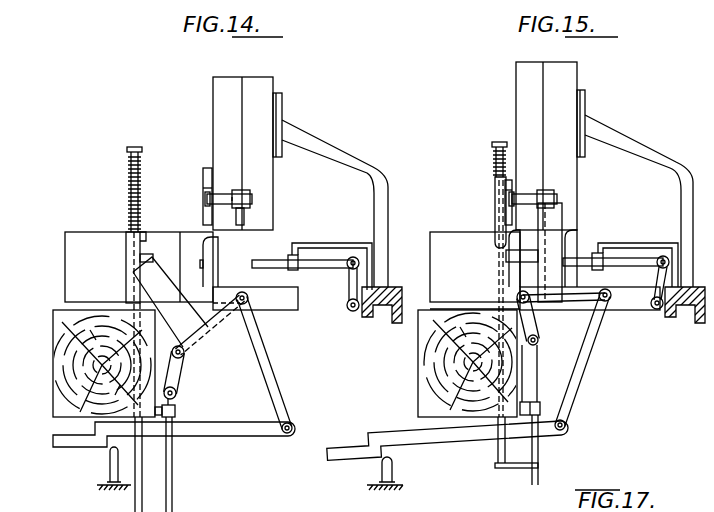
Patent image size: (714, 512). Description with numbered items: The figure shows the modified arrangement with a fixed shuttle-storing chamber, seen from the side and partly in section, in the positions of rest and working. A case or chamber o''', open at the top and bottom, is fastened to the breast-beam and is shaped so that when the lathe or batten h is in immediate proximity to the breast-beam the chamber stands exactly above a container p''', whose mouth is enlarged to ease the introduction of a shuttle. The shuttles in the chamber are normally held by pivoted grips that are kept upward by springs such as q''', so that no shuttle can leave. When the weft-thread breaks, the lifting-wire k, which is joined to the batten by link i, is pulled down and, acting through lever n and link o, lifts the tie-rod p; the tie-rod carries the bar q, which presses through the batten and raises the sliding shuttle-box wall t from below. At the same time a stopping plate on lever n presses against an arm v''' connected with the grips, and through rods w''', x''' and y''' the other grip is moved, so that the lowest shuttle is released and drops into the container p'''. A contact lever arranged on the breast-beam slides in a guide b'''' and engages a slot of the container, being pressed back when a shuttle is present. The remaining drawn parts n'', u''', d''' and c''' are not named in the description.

In FIG. 14, the case or chamber o''' is at (261, 152).
In FIG. 15, the case or chamber o''' is at (564, 146).
In FIG. 14, the curved arm n'' is at (335, 202).
In FIG. 15, the curved arm n'' is at (639, 201).
In FIG. 14, the rod y''' is at (198, 188).
In FIG. 15, the rod y''' is at (521, 187).
In FIG. 14, the rod x''' is at (193, 187).
In FIG. 15, the rod x''' is at (521, 181).
In FIG. 14, the rod w''' is at (194, 207).
In FIG. 15, the rod w''' is at (524, 207).
In FIG. 14, the arm v''' is at (252, 207).
In FIG. 15, the arm v''' is at (561, 203).
In FIG. 14, the wall t is at (138, 226).
In FIG. 15, the wall t is at (494, 216).
In FIG. 14, the spindle clamp u''' is at (126, 263).
In FIG. 15, the spindle clamp u''' is at (527, 258).
In FIG. 14, the container p''' is at (247, 273).
In FIG. 15, the container p''' is at (584, 257).
In FIG. 14, the connecting link d''' is at (170, 302).
In FIG. 15, the connecting link d''' is at (540, 252).
In FIG. 14, the guide b'''' is at (330, 257).
In FIG. 15, the guide b'''' is at (635, 255).
In FIG. 14, the rod c''' is at (305, 284).
In FIG. 15, the rod c''' is at (616, 282).
In FIG. 14, the spring q''' is at (386, 313).
In FIG. 15, the spring q''' is at (679, 312).
In FIG. 14, the lever n is at (211, 323).
In FIG. 15, the lever n is at (564, 309).
In FIG. 14, the link o is at (175, 381).
In FIG. 15, the link o is at (535, 356).
In FIG. 14, the link i is at (263, 368).
In FIG. 15, the link i is at (586, 379).
In FIG. 14, the lathe or batten h is at (78, 364).
In FIG. 15, the lathe or batten h is at (444, 366).
In FIG. 14, the lifting-wire k is at (196, 428).
In FIG. 15, the lifting-wire k is at (430, 436).
In FIG. 14, the bar q is at (145, 464).
In FIG. 15, the bar q is at (506, 442).
In FIG. 14, the tie-rod p is at (180, 464).
In FIG. 15, the tie-rod p is at (547, 450).